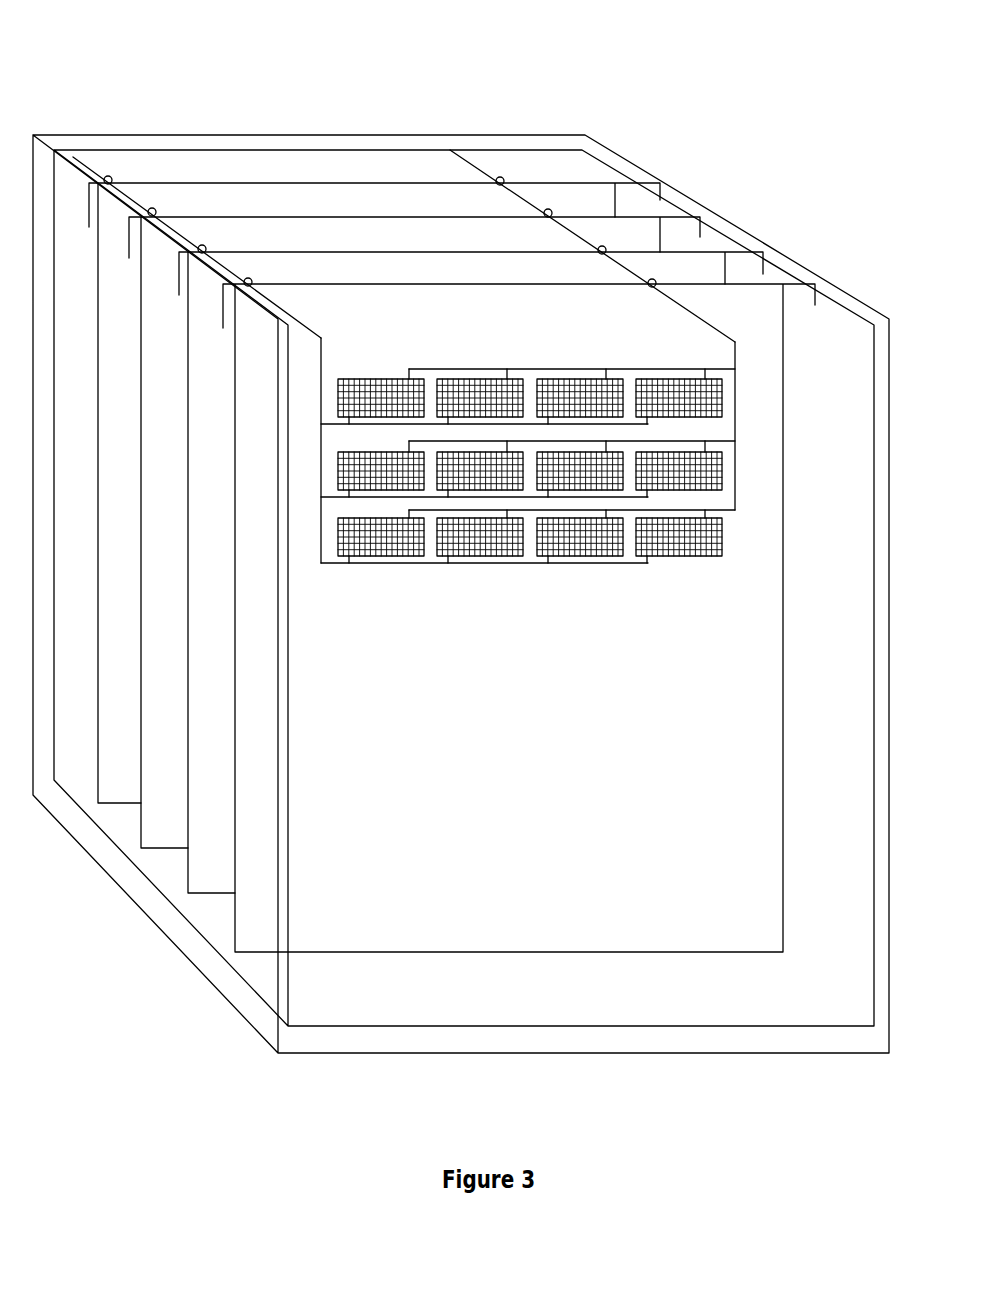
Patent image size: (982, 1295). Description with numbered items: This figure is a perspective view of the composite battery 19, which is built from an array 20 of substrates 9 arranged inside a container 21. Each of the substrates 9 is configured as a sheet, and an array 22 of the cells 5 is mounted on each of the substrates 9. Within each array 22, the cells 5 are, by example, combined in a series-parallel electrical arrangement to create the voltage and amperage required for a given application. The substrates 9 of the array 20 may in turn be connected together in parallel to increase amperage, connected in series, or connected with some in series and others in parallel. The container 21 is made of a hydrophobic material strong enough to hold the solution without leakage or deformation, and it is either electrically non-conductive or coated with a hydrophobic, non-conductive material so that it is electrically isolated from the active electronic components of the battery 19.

The cell 5 is at (675, 380).
The substrate 9 is at (428, 952).
The composite battery 19 is at (461, 559).
The array of substrates 20 is at (431, 629).
The container 21 is at (643, 1052).
The array of cells 22 is at (594, 389).